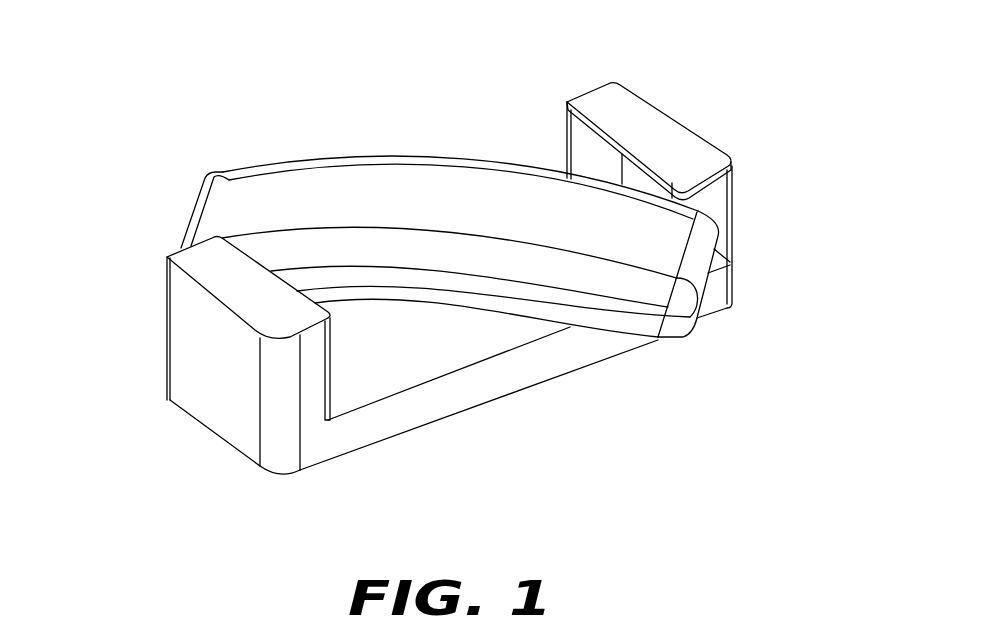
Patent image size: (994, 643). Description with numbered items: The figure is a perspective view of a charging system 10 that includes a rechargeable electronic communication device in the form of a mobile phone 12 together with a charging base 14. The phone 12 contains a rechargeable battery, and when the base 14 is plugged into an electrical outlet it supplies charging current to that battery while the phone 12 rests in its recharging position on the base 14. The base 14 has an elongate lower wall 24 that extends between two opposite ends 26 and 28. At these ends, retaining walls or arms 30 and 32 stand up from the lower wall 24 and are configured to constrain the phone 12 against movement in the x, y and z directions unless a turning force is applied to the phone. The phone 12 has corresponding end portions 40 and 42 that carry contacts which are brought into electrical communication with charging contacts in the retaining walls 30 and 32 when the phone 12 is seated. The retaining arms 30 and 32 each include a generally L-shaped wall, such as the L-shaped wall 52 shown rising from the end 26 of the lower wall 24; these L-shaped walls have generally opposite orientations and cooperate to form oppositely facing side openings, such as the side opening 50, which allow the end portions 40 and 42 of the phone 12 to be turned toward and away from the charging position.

The charging system 10 is at (462, 95).
The mobile phone 12 is at (386, 140).
The charging base 14 is at (449, 432).
The lower wall 24 is at (520, 380).
The end of lower wall 26 is at (318, 462).
The end of lower wall 28 is at (716, 306).
The retaining wall 30 is at (157, 230).
The retaining wall 32 is at (706, 113).
The end portion of phone 40 is at (247, 185).
The end portion of phone 42 is at (683, 342).
The side opening 50 is at (728, 215).
The L-shaped wall 52 is at (213, 452).